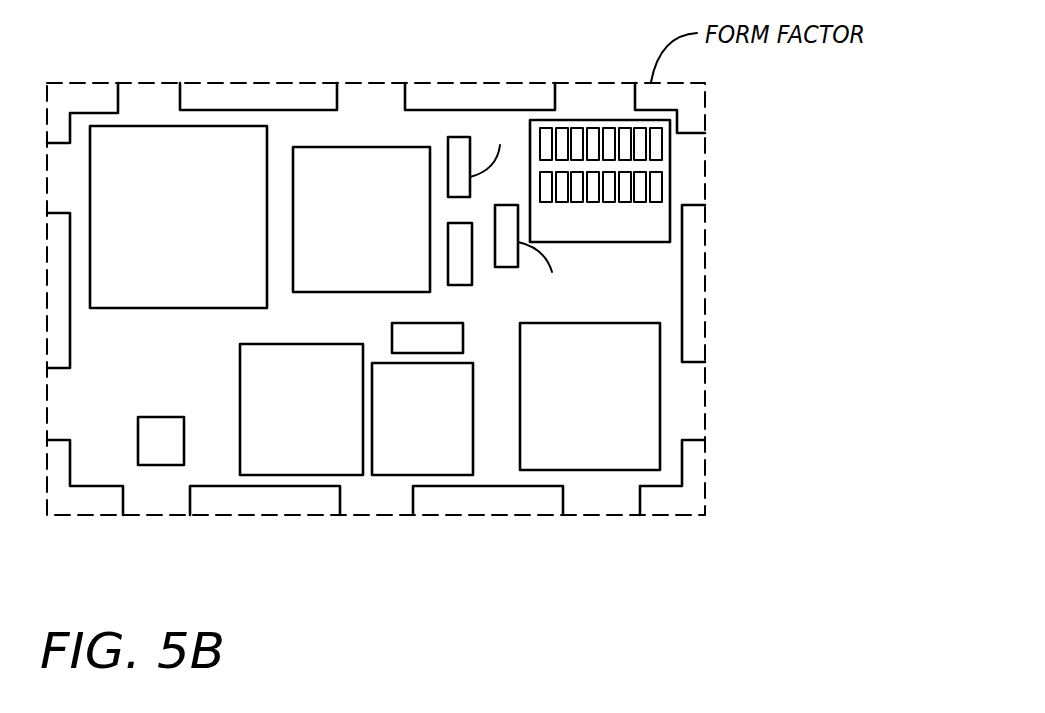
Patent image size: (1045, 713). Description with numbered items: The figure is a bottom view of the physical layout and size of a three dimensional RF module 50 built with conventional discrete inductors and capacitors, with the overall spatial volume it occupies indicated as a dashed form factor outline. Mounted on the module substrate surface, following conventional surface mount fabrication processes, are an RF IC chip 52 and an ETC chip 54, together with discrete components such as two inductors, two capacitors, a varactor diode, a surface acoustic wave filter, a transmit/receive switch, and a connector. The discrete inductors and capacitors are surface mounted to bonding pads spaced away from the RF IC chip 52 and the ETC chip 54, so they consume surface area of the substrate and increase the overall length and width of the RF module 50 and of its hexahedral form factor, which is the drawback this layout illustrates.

The RF module 50 is at (376, 331).
The RF IC chip 52 is at (400, 463).
The ETC chip 54 is at (568, 440).